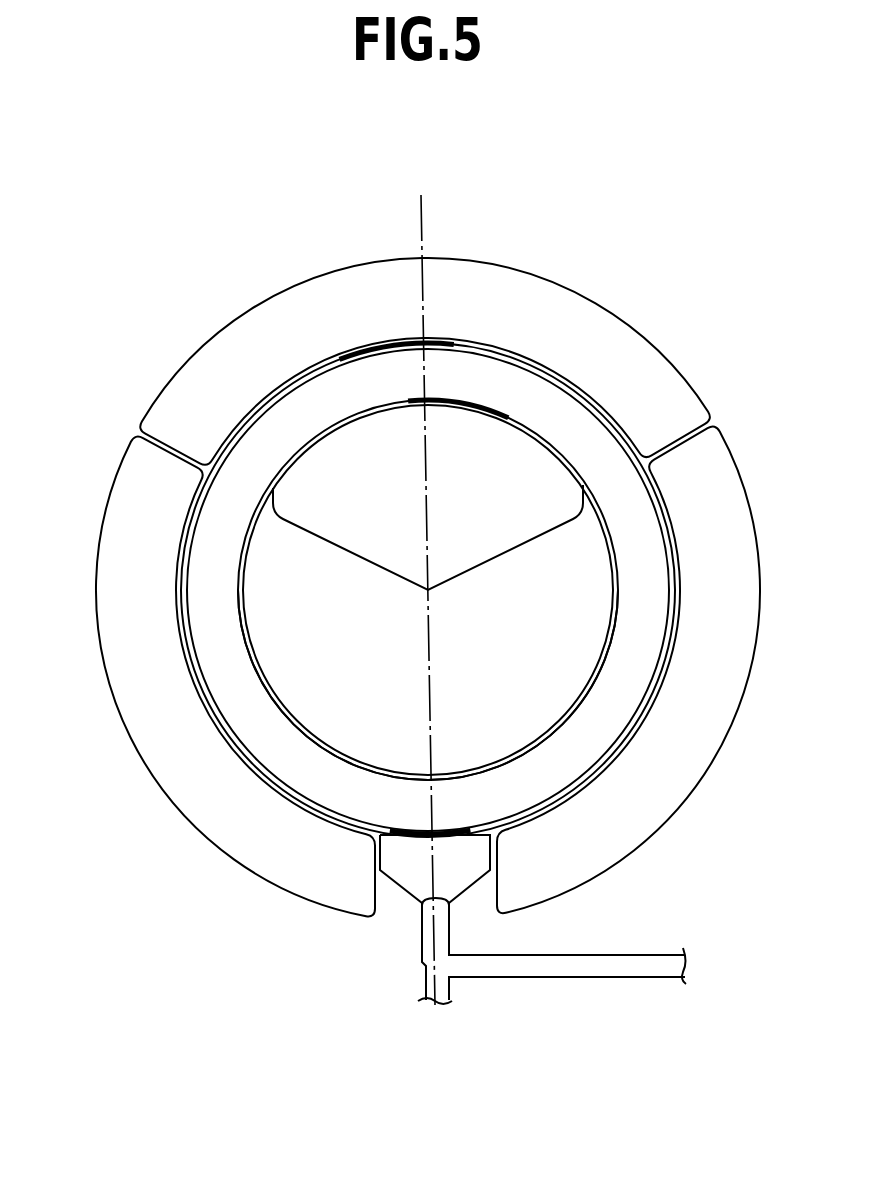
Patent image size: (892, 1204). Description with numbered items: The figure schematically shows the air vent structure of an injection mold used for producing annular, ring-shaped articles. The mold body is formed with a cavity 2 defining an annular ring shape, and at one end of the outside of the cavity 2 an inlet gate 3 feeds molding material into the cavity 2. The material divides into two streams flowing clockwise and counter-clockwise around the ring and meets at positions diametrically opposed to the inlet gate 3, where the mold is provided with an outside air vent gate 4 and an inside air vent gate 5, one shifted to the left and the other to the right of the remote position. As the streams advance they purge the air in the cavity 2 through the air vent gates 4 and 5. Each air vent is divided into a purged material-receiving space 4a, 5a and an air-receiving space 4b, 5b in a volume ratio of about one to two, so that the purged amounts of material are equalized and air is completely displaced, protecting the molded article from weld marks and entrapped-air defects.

The cavity 2 is at (207, 558).
The inlet gate 3 is at (435, 847).
The outside air vent gate 4 is at (413, 563).
The purged material-receiving space 4a is at (470, 305).
The air-receiving space 4b is at (200, 773).
The inside air vent gate 5 is at (523, 514).
The purged material-receiving space 5a is at (483, 497).
The air-receiving space 5b is at (552, 650).